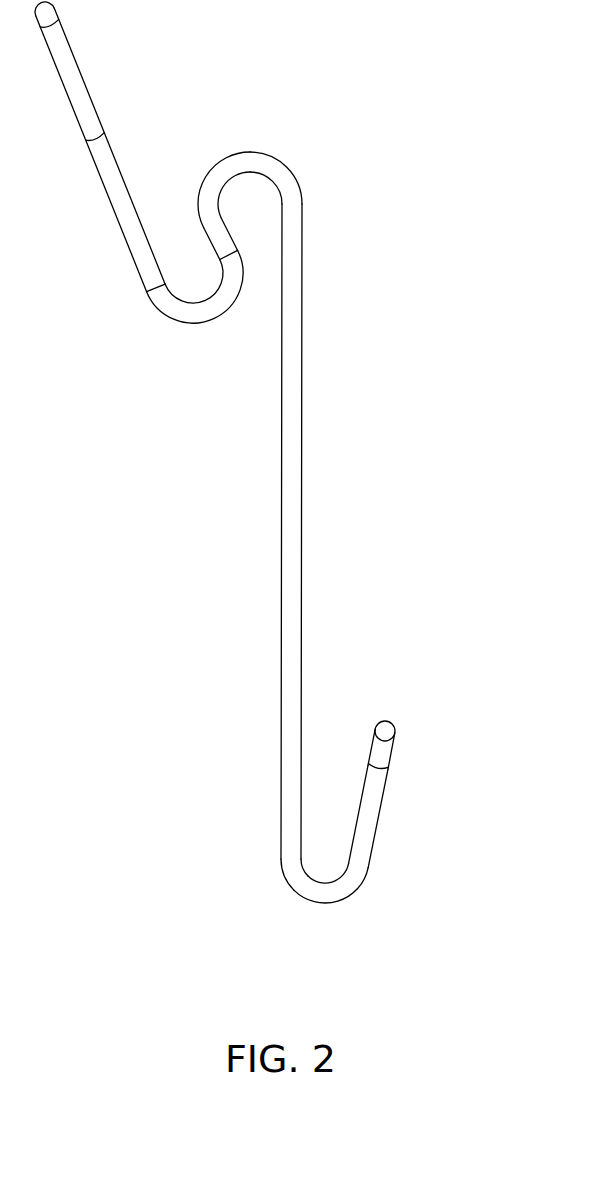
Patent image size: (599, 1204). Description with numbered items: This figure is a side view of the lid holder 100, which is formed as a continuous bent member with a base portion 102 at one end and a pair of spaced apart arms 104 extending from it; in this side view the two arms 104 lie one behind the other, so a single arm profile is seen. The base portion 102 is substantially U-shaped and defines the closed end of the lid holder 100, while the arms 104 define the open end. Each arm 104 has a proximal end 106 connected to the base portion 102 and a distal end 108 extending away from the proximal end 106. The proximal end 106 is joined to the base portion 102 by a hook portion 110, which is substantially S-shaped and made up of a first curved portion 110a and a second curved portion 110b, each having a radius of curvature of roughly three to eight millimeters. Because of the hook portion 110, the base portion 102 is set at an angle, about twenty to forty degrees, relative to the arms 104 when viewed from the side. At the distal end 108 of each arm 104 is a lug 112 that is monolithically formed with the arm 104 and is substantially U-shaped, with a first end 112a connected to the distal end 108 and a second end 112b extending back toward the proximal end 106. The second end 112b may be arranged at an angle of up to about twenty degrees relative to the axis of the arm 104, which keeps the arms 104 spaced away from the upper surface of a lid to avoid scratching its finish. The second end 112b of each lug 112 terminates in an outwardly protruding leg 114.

The lid holder 100 is at (284, 454).
The base portion 102 is at (111, 192).
The spaced apart arms 104 is at (293, 478).
The proximal end 106 is at (292, 200).
The distal end 108 is at (280, 862).
The hook portion 110 is at (262, 227).
The first curved portion 110a is at (223, 288).
The second curved portion 110b is at (243, 167).
The lug 112 is at (416, 772).
The first end of lug 112a is at (283, 870).
The second end of lug 112b is at (380, 757).
The leg 114 is at (390, 727).